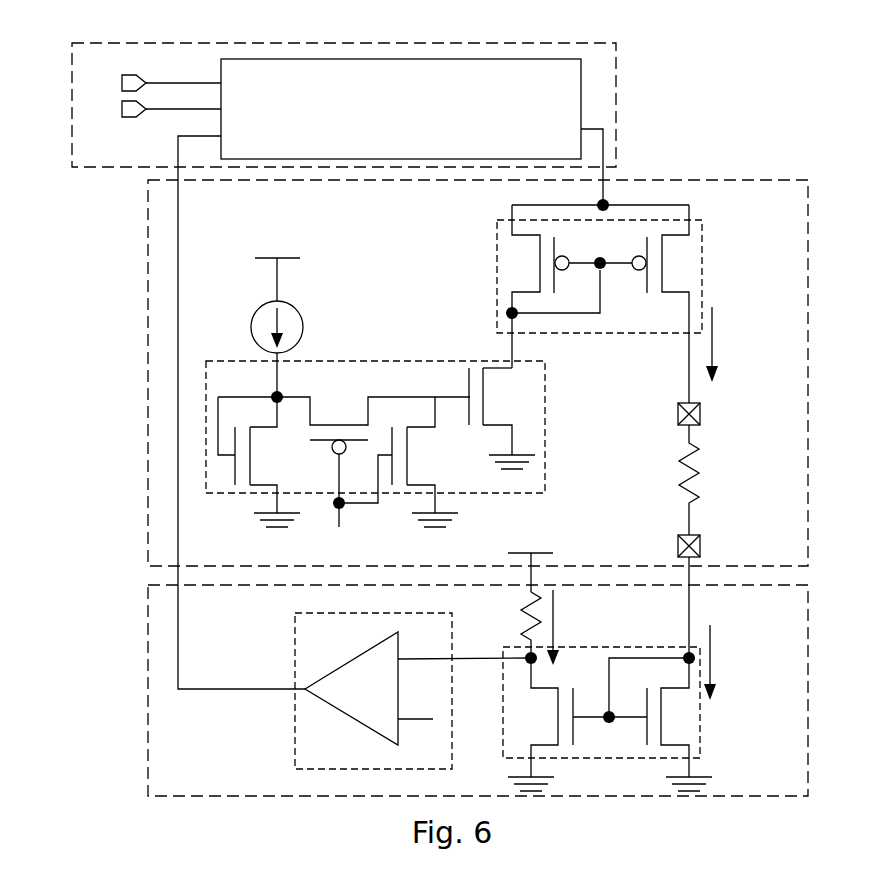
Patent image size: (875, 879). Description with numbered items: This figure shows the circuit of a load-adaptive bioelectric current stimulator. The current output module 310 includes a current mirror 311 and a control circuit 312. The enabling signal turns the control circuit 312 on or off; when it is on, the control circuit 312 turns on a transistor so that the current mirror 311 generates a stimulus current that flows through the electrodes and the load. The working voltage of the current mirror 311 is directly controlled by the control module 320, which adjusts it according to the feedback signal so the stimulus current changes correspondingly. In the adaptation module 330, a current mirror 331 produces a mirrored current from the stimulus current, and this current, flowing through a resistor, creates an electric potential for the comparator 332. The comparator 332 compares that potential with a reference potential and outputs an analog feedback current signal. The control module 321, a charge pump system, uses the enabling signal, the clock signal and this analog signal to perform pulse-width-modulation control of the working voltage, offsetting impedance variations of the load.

The current output module 310 is at (427, 419).
The current mirror 311 is at (702, 268).
The control circuit 312 is at (545, 418).
The control module 320 is at (423, 95).
The control module (charge pump system) 321 is at (581, 108).
The adaptation module 330 is at (433, 690).
The current mirror 331 is at (700, 740).
The comparator 332 is at (295, 719).